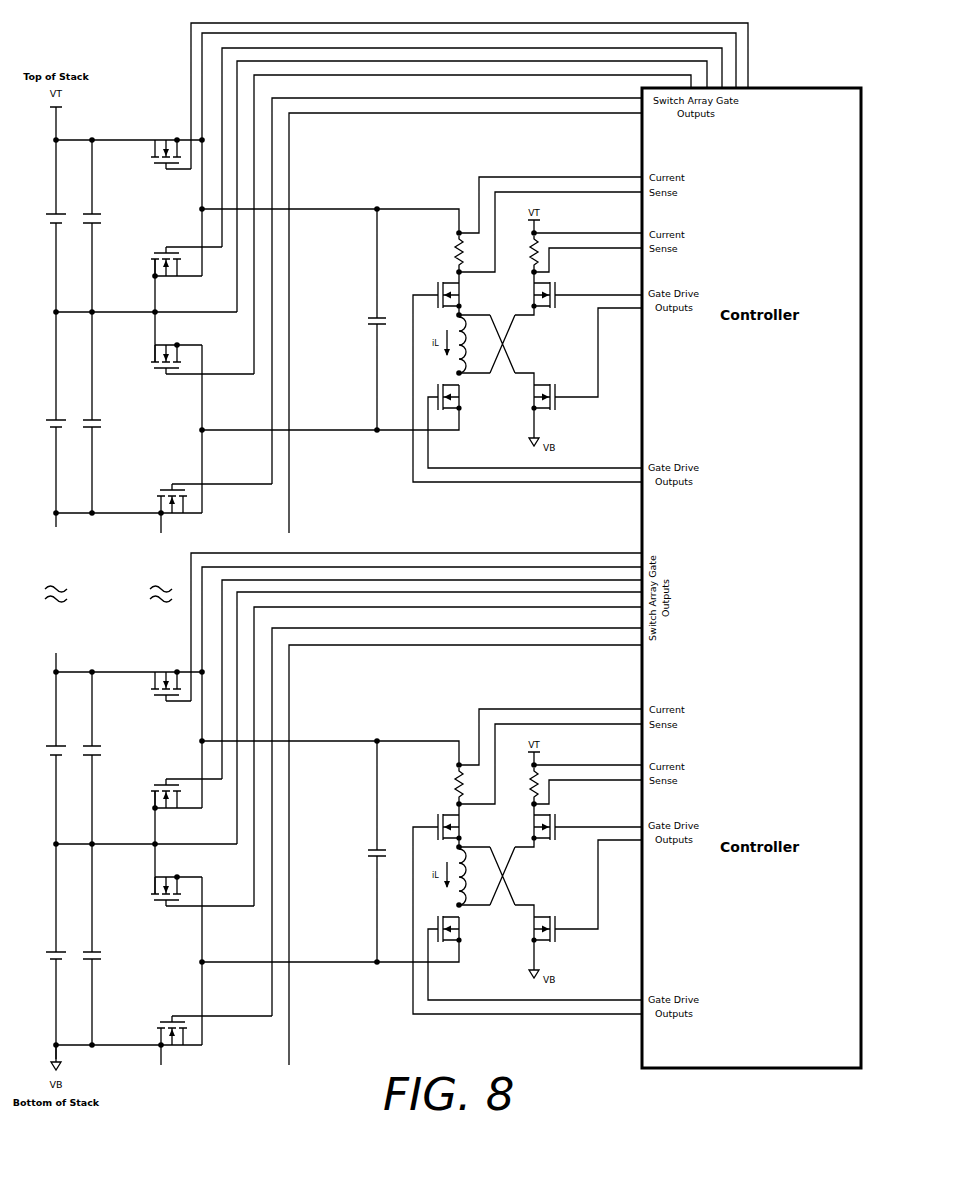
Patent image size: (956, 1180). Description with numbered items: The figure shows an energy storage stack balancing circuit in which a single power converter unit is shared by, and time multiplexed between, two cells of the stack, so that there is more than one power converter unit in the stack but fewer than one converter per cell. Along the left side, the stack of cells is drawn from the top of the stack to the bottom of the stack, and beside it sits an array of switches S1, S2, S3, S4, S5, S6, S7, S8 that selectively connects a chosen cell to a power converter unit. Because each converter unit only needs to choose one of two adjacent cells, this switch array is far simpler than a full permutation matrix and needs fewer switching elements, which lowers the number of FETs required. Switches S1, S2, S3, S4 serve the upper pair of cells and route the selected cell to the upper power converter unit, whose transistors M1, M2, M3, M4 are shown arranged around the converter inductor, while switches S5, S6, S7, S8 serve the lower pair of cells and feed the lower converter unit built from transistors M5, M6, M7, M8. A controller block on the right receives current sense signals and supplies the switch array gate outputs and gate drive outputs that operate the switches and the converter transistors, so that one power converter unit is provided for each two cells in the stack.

The switch S1 is at (167, 145).
The switch S2 is at (167, 270).
The switch S3 is at (167, 350).
The switch S4 is at (172, 506).
The switch S5 is at (167, 677).
The switch S6 is at (167, 802).
The switch S7 is at (167, 882).
The switch S8 is at (172, 1038).
The transistor M1 is at (435, 294).
The transistor M2 is at (447, 389).
The transistor M3 is at (560, 396).
The transistor M4 is at (559, 294).
The transistor M5 is at (435, 826).
The transistor M6 is at (447, 921).
The transistor M7 is at (560, 928).
The transistor M8 is at (559, 826).